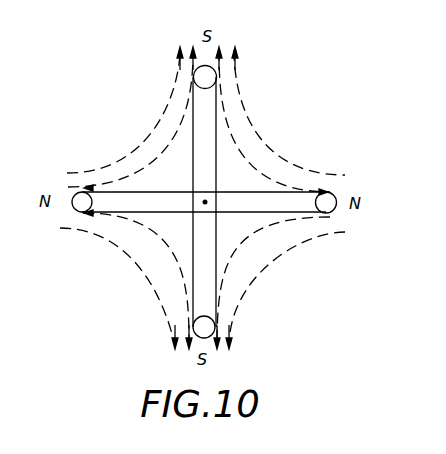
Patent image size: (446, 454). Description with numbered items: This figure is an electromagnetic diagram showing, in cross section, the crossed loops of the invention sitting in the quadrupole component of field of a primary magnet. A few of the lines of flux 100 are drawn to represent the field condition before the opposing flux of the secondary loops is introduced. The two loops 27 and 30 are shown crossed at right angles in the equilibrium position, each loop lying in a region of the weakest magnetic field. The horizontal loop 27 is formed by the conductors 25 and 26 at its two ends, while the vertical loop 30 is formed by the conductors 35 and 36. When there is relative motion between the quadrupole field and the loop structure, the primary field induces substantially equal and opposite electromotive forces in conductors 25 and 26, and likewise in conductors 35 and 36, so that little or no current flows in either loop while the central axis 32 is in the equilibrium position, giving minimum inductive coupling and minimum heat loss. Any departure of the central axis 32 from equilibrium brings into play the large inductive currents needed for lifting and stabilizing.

The conductor 25 is at (337, 214).
The conductor 26 is at (79, 211).
The loop 27 is at (250, 161).
The loop 30 is at (202, 131).
The central axis 32 is at (203, 213).
The conductor 35 is at (217, 76).
The conductor 36 is at (212, 325).
The lines of flux 100 is at (253, 120).